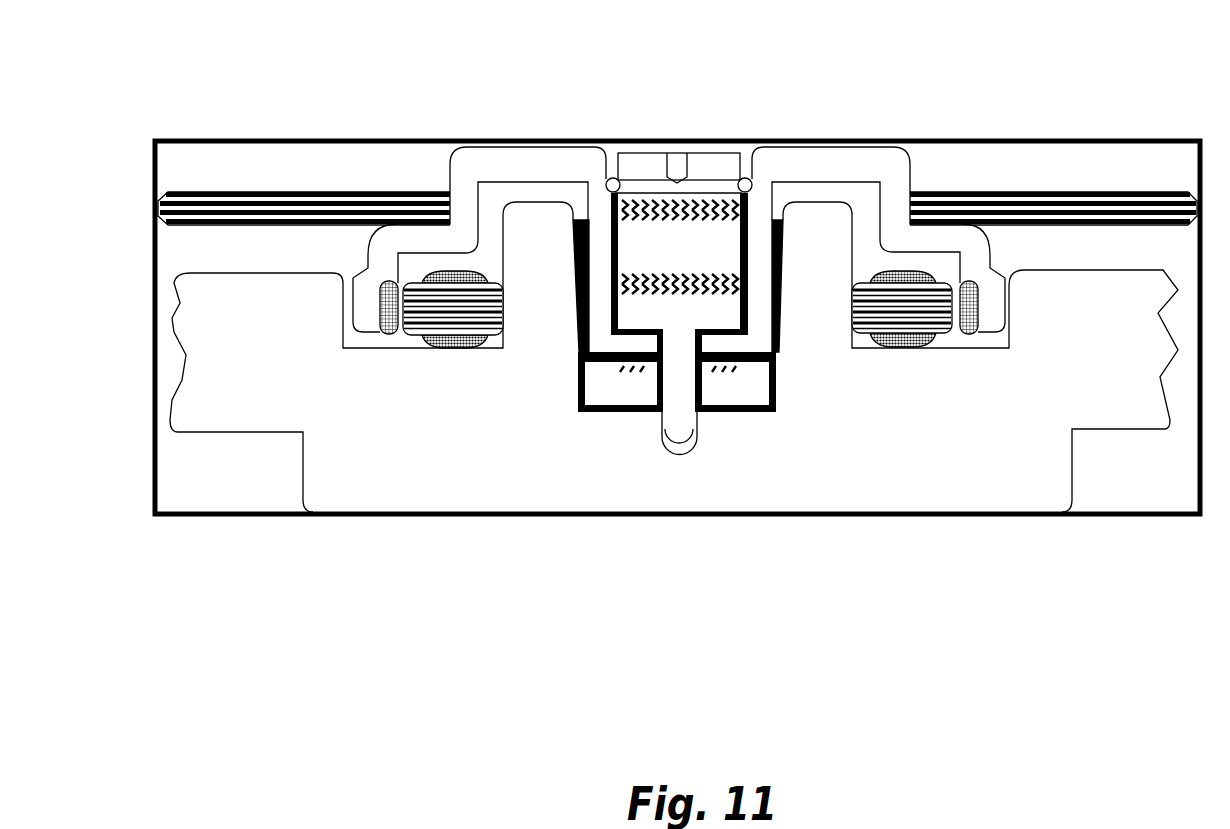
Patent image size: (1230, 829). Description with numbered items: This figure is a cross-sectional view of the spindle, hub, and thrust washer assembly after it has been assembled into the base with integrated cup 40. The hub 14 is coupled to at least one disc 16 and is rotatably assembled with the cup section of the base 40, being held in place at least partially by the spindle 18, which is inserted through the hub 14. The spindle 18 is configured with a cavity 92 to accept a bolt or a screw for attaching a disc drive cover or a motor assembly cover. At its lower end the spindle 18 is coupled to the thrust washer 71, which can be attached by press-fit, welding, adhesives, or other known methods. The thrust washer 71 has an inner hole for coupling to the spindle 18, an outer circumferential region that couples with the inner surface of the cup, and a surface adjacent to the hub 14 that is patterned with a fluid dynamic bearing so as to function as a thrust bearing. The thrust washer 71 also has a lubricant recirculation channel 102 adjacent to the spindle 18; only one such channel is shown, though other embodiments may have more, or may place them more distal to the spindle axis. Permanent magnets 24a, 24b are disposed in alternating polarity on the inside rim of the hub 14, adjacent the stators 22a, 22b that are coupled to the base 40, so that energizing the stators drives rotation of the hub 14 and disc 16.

The hub 14 is at (568, 168).
The disc 16 is at (283, 192).
The spindle 18 is at (703, 178).
The cavity 92 is at (676, 168).
The stator 22a is at (462, 298).
The stator 22b is at (887, 302).
The permanent magnet 24a is at (384, 318).
The permanent magnet 24b is at (977, 330).
The base with integrated cup 40 is at (390, 463).
The thrust washer 71 is at (745, 377).
The lubricant recirculation channel 102 is at (703, 413).